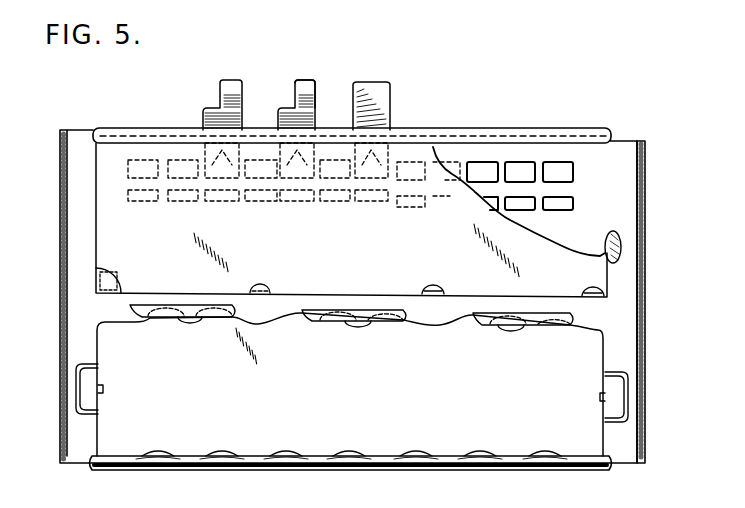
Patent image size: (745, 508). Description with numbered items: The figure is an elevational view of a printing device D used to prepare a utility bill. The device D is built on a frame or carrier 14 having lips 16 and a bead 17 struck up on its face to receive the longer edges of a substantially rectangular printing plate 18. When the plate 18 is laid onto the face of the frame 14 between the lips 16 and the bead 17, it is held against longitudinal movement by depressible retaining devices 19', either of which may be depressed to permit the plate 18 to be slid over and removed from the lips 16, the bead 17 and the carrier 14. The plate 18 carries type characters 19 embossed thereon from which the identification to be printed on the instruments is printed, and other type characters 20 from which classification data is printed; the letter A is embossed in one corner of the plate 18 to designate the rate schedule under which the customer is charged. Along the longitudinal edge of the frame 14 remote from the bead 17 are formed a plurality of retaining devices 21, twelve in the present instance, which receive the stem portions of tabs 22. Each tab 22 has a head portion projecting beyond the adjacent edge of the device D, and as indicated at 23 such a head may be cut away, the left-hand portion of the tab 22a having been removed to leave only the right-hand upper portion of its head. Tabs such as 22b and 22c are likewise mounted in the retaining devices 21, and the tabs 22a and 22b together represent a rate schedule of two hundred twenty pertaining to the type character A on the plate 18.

The printing device D is at (628, 133).
The frame or carrier 14 is at (643, 308).
The lips 16 is at (218, 314).
The bead 17 is at (417, 470).
The printing plate 18 is at (428, 424).
The type characters 19 is at (380, 382).
The depressible retaining devices 19' is at (349, 393).
The type characters 20 is at (121, 431).
The retaining devices 21 is at (552, 168).
The tabs 22 is at (396, 111).
The tab 22a is at (298, 82).
The tab 22b is at (230, 67).
The tab 22c is at (381, 82).
The cut-away head portion 23 is at (295, 105).
The type character A is at (348, 363).